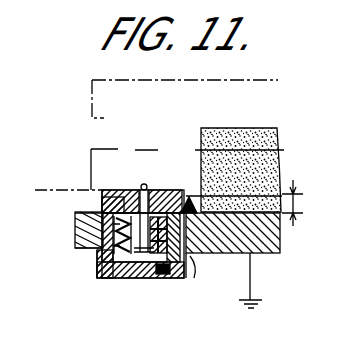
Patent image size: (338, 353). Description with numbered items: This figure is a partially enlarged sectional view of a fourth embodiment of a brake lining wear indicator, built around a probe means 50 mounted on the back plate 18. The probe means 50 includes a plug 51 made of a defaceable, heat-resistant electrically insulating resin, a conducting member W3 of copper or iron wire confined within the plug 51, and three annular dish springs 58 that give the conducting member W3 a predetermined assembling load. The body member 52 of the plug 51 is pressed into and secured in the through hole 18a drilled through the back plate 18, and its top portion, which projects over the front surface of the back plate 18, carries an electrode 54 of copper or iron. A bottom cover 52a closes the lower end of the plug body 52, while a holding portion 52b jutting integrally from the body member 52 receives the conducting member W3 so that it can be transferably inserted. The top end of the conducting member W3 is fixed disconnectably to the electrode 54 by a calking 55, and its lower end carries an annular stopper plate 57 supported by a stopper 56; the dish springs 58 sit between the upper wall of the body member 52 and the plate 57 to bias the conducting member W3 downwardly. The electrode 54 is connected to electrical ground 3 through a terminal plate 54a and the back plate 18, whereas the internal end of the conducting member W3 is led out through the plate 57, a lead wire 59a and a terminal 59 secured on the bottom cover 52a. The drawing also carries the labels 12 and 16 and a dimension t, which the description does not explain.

The machine frame envelope 12 is at (99, 80).
The base plate 16 is at (252, 138).
The back plate 18 is at (250, 240).
The through hole 18a is at (192, 258).
The electrical ground 3 is at (262, 290).
The probe means 50 is at (111, 187).
The plug 51 is at (104, 191).
The body member 52 is at (160, 279).
The bottom cover 52a is at (116, 279).
The holding portion 52b is at (221, 160).
The electrode 54 is at (127, 191).
The terminal plate 54a is at (190, 196).
The calking 55 is at (146, 184).
The stopper 56 is at (122, 279).
The annular stopper plate 57 is at (100, 256).
The annular dish springs 58 is at (77, 218).
The terminal 59 is at (146, 279).
The lead wire 59a is at (180, 276).
The conducting member W3 is at (99, 279).
The thickness dimension t is at (300, 203).